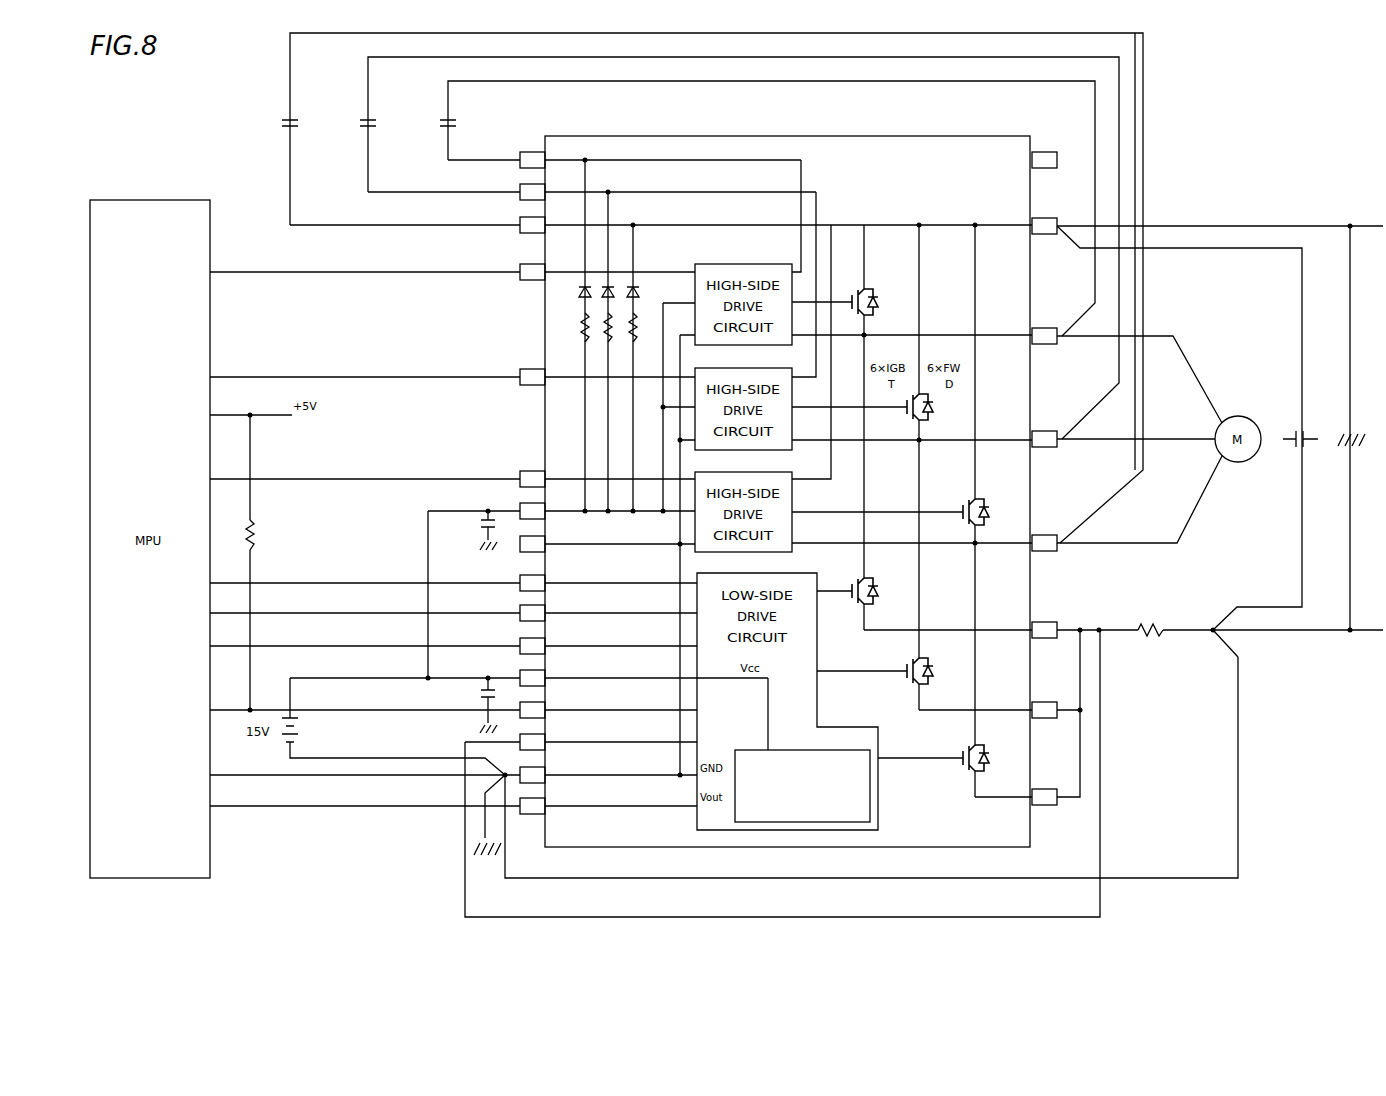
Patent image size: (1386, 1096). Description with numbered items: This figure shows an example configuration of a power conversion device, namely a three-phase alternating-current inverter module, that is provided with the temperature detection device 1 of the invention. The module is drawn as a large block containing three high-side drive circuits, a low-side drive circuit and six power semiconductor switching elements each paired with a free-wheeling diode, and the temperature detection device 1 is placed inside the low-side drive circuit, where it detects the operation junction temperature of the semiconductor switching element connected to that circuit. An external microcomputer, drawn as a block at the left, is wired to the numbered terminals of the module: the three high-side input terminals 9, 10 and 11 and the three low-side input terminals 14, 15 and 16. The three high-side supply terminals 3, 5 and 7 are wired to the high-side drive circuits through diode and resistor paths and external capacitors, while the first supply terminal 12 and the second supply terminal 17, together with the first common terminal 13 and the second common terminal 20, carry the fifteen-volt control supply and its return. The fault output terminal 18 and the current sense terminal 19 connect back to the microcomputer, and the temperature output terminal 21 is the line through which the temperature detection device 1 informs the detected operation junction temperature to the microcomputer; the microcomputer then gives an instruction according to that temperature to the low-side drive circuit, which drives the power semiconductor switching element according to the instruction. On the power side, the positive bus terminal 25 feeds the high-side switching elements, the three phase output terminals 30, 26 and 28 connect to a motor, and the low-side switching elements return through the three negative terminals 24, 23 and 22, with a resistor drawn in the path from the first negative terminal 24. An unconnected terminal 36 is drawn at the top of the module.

The temperature detection device 1 is at (870, 801).
The VB(U) terminal 3 is at (624, 155).
The VB(V) terminal 5 is at (592, 187).
The VB(W) terminal 7 is at (661, 220).
The IN(HU) terminal 9 is at (452, 267).
The IN(HV) terminal 10 is at (452, 372).
The IN(HW) terminal 11 is at (452, 474).
The Vcc terminal 12 is at (561, 507).
The COM terminal 13 is at (607, 540).
The IN(LU) terminal 14 is at (453, 579).
The IN(LV) terminal 15 is at (453, 609).
The IN(LW) terminal 16 is at (453, 642).
The Vcc terminal 17 is at (529, 674).
The VFO terminal 18 is at (453, 706).
The IS terminal 19 is at (581, 738).
The COM terminal 20 is at (453, 771).
The TEMP terminal 21 is at (453, 802).
The N(W) terminal 22 is at (1025, 794).
The N(V) terminal 23 is at (1027, 707).
The N(U) terminal 24 is at (1027, 627).
The P terminal 25 is at (1036, 222).
The V output terminal 26 is at (1035, 435).
The W output terminal 28 is at (1033, 539).
The U output terminal 30 is at (1035, 332).
The NC terminal 36 is at (1033, 160).